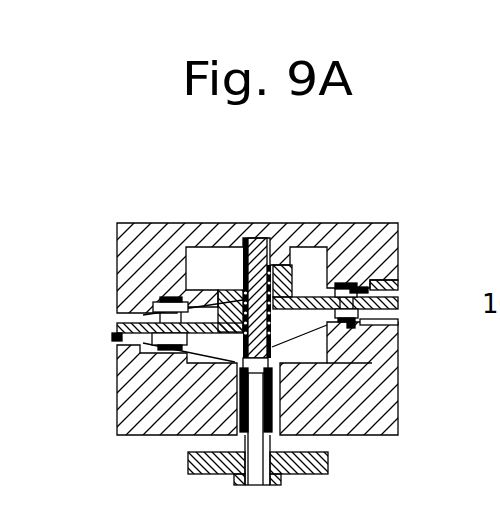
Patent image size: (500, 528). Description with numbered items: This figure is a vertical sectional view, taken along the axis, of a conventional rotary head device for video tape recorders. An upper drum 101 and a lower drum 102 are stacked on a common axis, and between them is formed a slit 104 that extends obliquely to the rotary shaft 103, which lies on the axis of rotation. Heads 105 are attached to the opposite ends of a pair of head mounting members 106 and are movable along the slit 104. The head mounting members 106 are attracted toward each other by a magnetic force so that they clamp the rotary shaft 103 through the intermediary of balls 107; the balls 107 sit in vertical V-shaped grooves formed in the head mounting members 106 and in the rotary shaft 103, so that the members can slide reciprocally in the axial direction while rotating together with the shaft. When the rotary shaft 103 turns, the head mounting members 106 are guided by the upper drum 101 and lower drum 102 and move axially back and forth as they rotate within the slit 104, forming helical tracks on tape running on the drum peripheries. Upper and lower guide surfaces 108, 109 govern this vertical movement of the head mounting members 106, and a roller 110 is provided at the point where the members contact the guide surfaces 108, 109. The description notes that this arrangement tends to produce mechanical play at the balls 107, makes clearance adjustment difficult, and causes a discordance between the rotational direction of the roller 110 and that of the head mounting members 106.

The upper drum 101 is at (120, 280).
The lower drum 102 is at (124, 422).
The rotary shaft 103 is at (245, 238).
The slit 104 is at (120, 322).
The head 105 is at (116, 338).
The head mounting member 106 is at (178, 302).
The ball 107 is at (213, 300).
The upper guide surface 108 is at (348, 284).
The lower guide surface 109 is at (362, 328).
The roller 110 is at (383, 280).